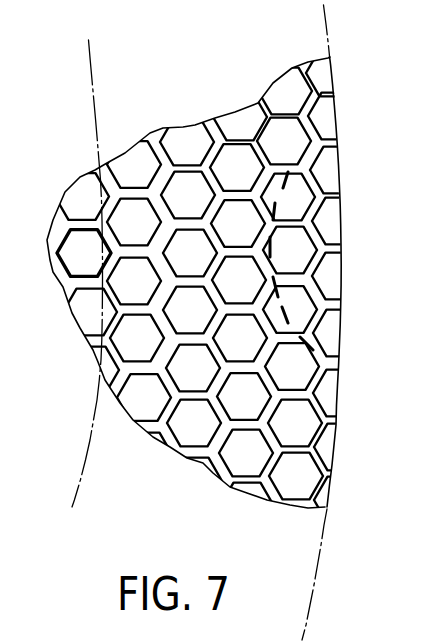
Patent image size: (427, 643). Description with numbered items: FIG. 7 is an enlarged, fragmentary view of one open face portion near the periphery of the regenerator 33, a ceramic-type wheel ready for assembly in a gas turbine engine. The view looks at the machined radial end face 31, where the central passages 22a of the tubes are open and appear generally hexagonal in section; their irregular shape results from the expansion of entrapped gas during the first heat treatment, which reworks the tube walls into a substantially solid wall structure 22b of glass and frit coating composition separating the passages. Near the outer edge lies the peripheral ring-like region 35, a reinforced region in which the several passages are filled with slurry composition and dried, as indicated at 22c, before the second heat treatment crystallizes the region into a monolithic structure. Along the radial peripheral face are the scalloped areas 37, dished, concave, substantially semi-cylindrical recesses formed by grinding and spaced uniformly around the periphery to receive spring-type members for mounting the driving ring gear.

The central passages 22a is at (83, 262).
The solid wall structure 22b is at (218, 138).
The filled passages 22c is at (140, 163).
The radial end face 31 is at (287, 363).
The regenerator 33 is at (342, 448).
The peripheral ring-like region 35 is at (317, 537).
The scalloped areas 37 is at (275, 218).